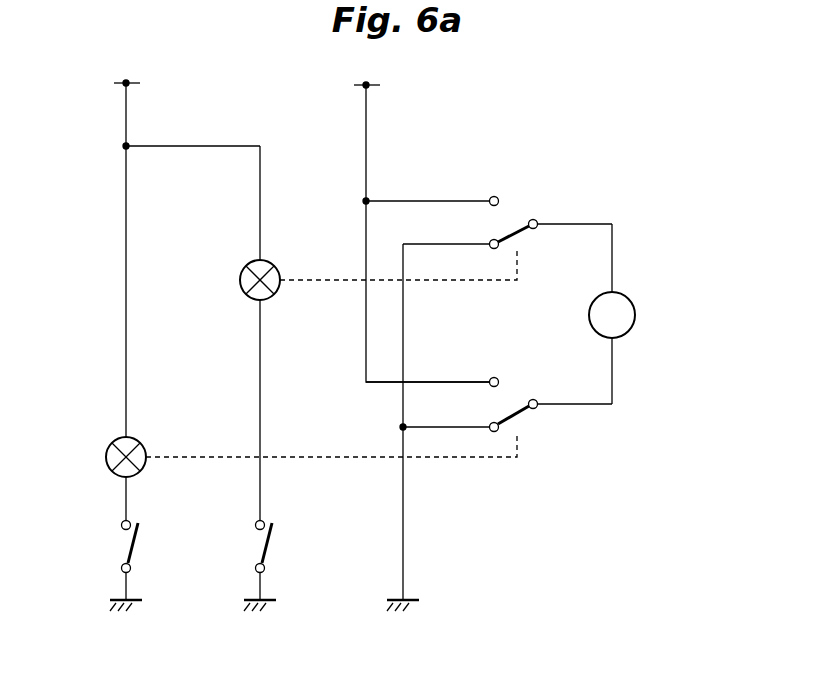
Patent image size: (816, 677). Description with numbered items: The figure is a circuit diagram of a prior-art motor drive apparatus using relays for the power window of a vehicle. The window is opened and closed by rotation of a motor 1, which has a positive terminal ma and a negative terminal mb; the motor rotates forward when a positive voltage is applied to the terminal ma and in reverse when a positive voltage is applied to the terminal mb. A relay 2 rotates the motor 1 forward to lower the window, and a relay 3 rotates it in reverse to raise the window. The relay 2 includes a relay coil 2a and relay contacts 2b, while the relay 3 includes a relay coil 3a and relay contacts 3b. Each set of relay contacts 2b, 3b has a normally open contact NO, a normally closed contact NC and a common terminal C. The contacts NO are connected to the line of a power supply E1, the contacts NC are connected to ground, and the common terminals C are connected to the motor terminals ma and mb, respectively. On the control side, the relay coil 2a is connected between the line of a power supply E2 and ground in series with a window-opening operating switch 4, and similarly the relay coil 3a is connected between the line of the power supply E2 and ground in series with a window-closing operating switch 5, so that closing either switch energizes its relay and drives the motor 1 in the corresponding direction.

The motor 1 is at (644, 314).
The relay 2 is at (228, 330).
The relay coil 2a is at (244, 278).
The relay contacts 2b is at (512, 217).
The relay 3 is at (131, 447).
The relay coil 3a is at (112, 440).
The relay contacts 3b is at (510, 398).
The window-opening operating switch 4 is at (280, 550).
The window-closing operating switch 5 is at (145, 550).
The positive terminal ma is at (613, 289).
The negative terminal mb is at (614, 340).
The power supply E1 is at (421, 228).
The power supply E2 is at (144, 254).